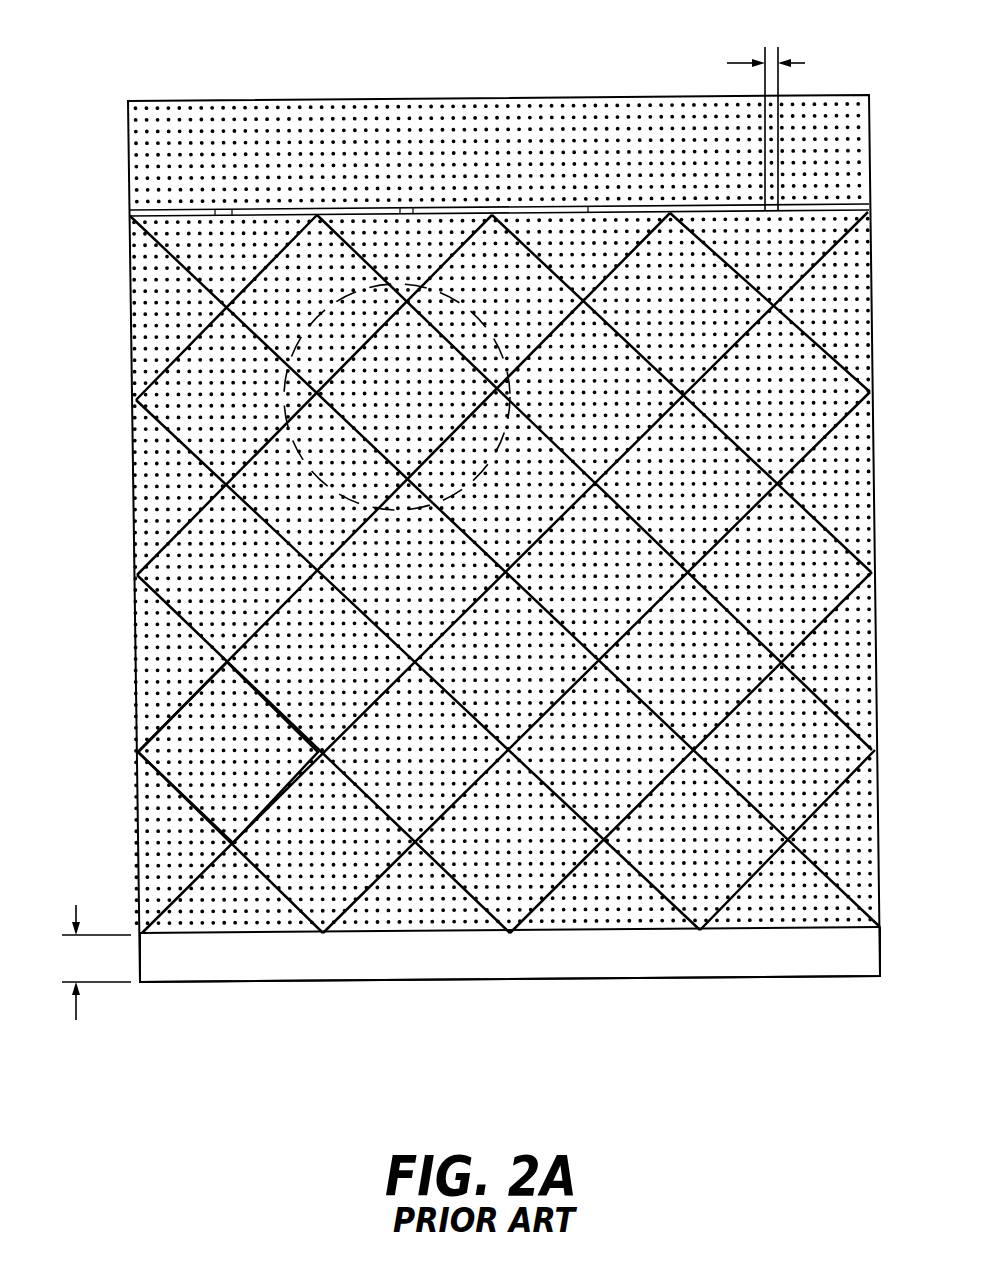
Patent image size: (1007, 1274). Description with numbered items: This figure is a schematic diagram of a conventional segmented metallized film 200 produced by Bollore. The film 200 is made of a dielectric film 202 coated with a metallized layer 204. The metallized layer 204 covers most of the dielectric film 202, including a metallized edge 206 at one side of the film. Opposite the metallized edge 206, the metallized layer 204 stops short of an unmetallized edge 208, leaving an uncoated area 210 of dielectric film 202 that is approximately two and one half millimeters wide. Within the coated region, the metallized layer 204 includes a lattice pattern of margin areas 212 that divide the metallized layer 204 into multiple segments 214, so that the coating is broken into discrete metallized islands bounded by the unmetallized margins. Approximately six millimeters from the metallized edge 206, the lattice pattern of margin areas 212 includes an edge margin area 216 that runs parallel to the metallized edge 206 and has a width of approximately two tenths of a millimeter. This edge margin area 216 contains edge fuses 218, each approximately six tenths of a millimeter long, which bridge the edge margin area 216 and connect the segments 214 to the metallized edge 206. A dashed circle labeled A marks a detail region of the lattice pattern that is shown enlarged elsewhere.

The segmented metallized film 200 is at (590, 58).
The dielectric film 202 is at (828, 957).
The metallized layer 204 is at (157, 499).
The metallized edge 206 is at (453, 98).
The unmetallized edge 208 is at (623, 977).
The uncoated area 210 is at (96, 962).
The margin areas 212 is at (155, 737).
The segments 214 is at (250, 765).
The edge margin area 216 is at (143, 212).
The edge fuses 218 is at (788, 128).
The detail region A is at (372, 275).